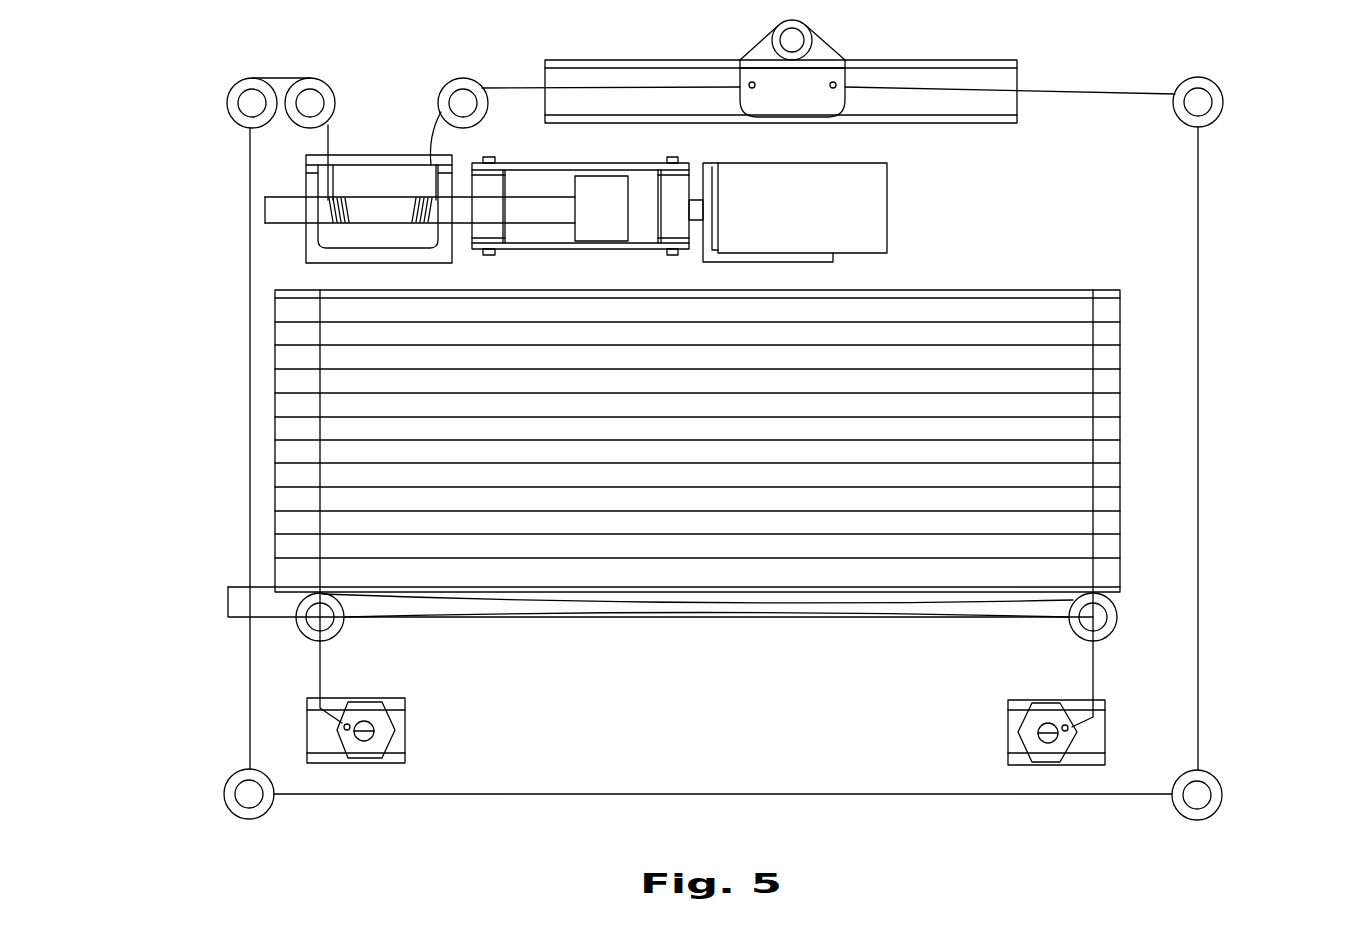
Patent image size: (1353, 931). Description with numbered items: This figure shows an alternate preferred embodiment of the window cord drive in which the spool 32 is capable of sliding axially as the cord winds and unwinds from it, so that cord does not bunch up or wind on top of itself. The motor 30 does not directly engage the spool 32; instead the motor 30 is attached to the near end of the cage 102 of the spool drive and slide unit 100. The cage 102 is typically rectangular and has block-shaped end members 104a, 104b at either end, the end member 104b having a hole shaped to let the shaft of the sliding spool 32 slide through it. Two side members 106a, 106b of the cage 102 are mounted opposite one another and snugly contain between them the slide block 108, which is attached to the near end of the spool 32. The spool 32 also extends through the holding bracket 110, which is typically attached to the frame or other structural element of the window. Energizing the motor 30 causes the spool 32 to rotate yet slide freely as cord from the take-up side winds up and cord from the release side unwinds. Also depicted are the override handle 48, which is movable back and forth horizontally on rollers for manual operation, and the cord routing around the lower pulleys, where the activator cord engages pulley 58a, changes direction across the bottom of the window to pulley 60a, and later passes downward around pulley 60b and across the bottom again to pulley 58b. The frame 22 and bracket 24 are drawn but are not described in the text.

The louver frame / grid 22 is at (971, 327).
The mounting bracket 24 is at (239, 588).
The motor 30 is at (805, 222).
The sliding spool 32 is at (418, 194).
The override handle 48 is at (806, 27).
The pulley 58a is at (187, 800).
The pulley 58b is at (247, 796).
The pulley 60a is at (1256, 803).
The pulley 60b is at (1197, 796).
The spool drive and slide unit 100 is at (603, 164).
The cage 102 is at (603, 208).
The end member 104a is at (662, 228).
The end member 104b is at (480, 230).
The side member 106a is at (681, 163).
The side member 106b is at (532, 252).
The slide block 108 is at (620, 222).
The holding bracket 110 is at (306, 237).